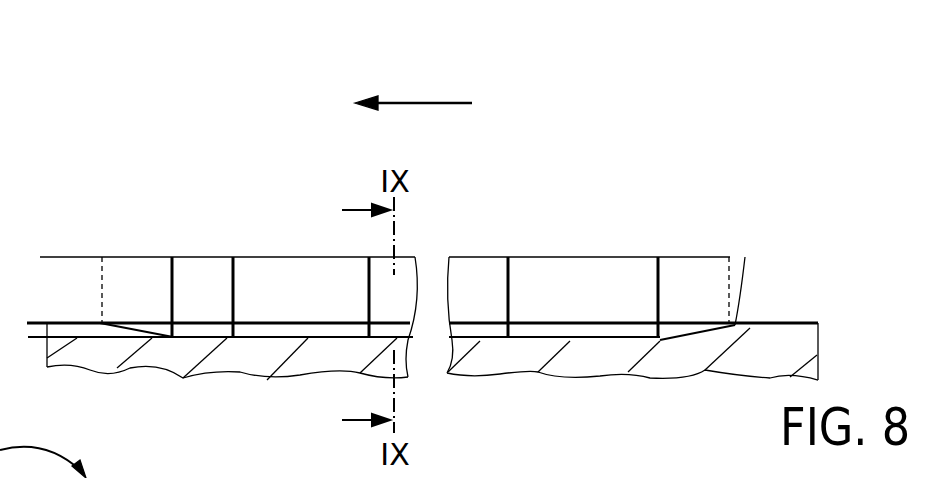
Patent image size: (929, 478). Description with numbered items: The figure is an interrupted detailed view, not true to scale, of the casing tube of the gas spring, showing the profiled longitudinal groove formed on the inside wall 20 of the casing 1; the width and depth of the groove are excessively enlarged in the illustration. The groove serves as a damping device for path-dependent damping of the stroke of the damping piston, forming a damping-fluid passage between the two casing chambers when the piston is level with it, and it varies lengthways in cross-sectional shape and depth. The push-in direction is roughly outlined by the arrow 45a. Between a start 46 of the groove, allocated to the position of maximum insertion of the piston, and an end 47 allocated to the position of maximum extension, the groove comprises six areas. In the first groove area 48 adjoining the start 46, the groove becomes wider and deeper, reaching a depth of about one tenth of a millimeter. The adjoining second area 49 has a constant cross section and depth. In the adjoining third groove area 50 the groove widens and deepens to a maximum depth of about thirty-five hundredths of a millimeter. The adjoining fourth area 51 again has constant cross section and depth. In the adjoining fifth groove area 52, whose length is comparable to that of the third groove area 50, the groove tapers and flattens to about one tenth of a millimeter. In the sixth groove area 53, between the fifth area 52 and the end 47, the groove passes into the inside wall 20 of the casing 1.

The casing 1 is at (772, 324).
The inside wall 20 is at (797, 323).
The arrow 45a is at (413, 101).
The start 46 is at (100, 310).
The end 47 is at (735, 325).
The first groove area 48 is at (142, 270).
The second area 49 is at (202, 270).
The third groove area 50 is at (287, 270).
The fourth area 51 is at (472, 270).
The fifth groove area 52 is at (577, 270).
The sixth groove area 53 is at (695, 270).